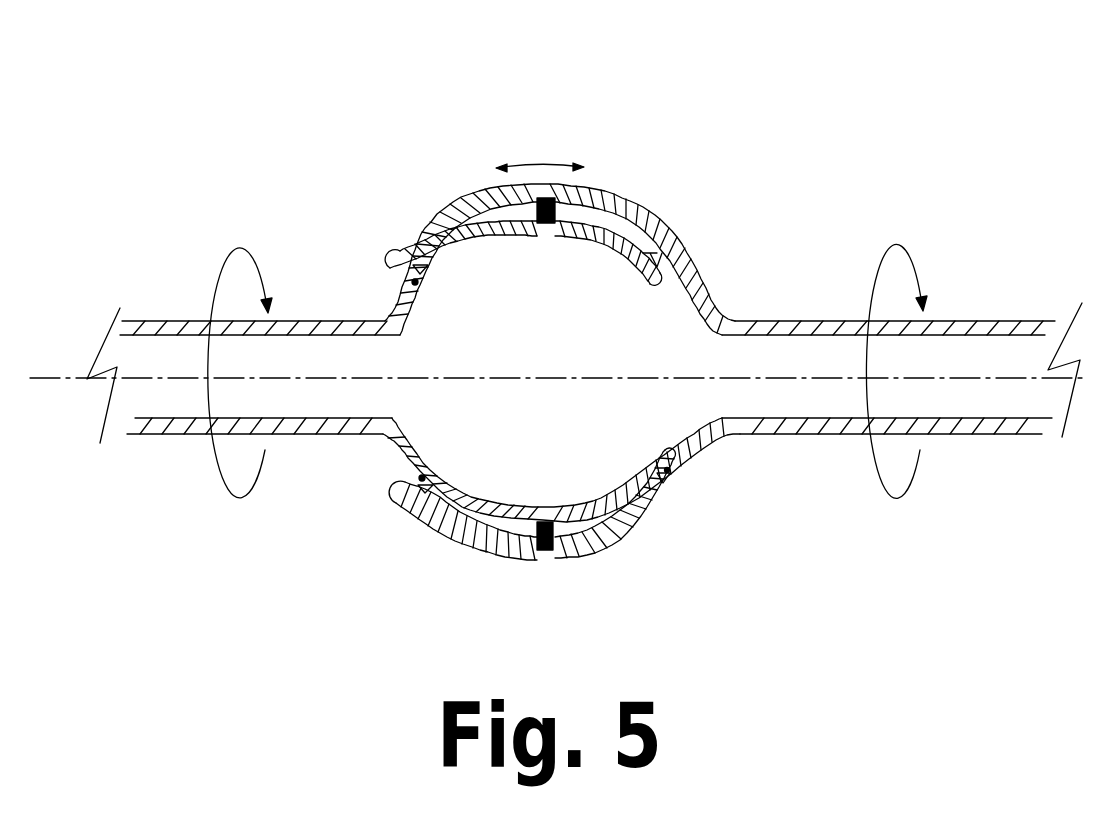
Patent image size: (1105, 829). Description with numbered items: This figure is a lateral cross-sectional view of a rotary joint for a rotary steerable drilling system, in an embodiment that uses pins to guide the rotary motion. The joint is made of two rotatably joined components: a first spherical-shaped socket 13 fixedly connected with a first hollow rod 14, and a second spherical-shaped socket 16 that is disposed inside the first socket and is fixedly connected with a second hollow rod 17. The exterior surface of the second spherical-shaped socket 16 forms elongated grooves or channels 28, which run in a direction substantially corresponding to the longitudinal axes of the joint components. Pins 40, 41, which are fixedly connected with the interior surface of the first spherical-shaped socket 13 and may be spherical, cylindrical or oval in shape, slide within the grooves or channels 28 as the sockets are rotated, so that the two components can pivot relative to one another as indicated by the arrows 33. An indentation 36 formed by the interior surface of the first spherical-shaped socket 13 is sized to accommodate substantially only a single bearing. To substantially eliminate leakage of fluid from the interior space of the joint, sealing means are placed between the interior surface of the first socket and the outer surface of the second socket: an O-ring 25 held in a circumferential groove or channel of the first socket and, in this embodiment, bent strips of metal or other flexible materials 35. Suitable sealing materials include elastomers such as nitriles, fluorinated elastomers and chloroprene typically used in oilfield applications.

The first spherical-shaped socket 13 is at (500, 308).
The first hollow rod 14 is at (1004, 321).
The second spherical-shaped socket 16 is at (520, 540).
The second hollow rod 17 is at (195, 321).
The O-ring 25 is at (418, 266).
The groove or channel 28 is at (502, 381).
The arrows 33 is at (537, 187).
The bent strips of metal or other flexible materials 35 is at (413, 263).
The indentation 36 is at (558, 197).
The pin 40 is at (556, 537).
The pin 41 is at (483, 201).